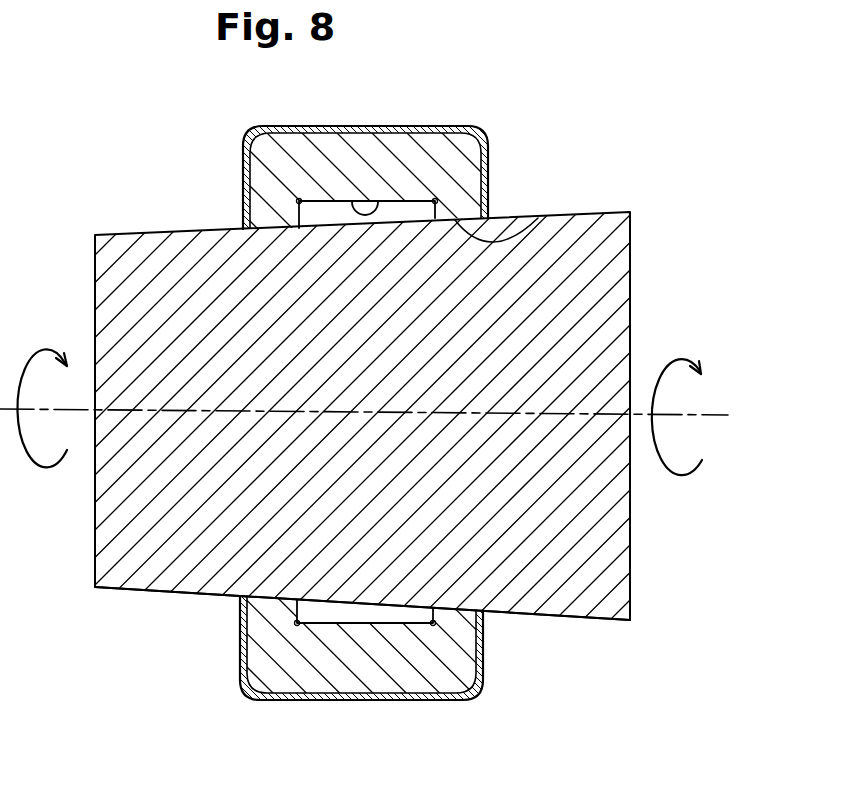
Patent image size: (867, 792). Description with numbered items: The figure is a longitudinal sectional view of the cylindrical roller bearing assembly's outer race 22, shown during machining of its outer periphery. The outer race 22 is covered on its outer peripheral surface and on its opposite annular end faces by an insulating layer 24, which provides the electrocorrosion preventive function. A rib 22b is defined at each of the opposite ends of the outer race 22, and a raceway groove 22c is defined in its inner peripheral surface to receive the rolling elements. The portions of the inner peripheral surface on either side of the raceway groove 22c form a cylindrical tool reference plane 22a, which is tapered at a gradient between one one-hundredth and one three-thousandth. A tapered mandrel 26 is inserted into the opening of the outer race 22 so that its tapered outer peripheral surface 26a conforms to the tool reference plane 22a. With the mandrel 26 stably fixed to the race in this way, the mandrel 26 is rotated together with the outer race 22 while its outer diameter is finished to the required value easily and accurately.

The outer race 22 is at (440, 163).
The cylindrical tool reference plane 22a is at (318, 230).
The rib 22b is at (248, 187).
The raceway groove 22c is at (263, 203).
The insulating layer 24 is at (373, 128).
The tapered mandrel 26 is at (570, 317).
The outer peripheral surface 26a is at (173, 593).